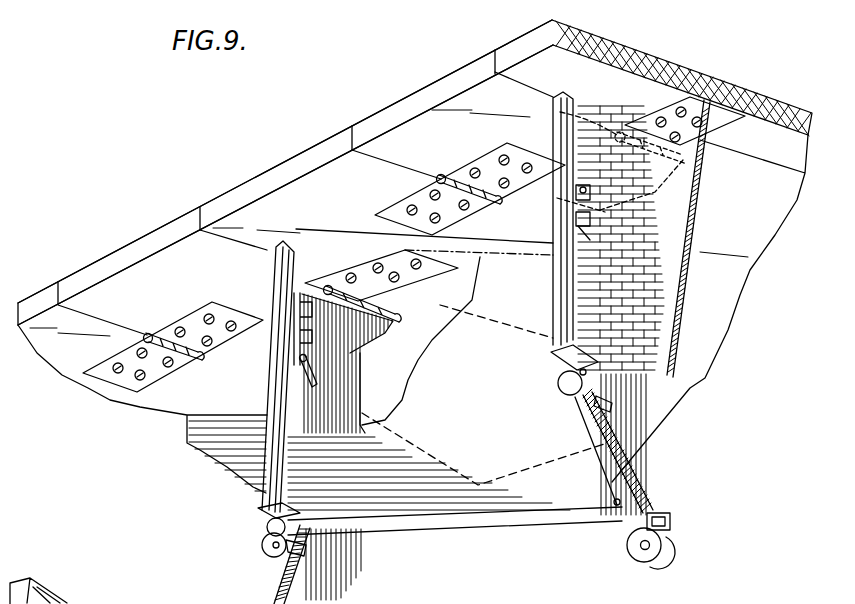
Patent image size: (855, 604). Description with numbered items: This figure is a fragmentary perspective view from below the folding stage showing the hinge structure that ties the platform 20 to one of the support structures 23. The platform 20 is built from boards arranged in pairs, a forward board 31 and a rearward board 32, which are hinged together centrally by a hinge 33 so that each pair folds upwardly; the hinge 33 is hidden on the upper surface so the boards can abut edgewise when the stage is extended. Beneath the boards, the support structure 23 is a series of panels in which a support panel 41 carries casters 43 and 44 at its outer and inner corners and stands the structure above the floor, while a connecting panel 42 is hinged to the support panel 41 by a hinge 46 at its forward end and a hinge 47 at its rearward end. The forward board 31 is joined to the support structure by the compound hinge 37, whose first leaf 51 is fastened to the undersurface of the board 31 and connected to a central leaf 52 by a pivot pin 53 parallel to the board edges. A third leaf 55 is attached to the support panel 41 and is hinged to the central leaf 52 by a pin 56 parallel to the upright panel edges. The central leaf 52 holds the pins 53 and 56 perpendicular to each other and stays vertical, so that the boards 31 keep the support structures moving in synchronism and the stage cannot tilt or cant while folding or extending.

The platform 20 is at (394, 91).
The support structure 23 is at (470, 541).
The forward board 31 is at (624, 45).
The rearward board 32 is at (455, 75).
The hinge 33 is at (147, 336).
The hinge structure 37 is at (529, 258).
The support panel 41 is at (580, 412).
The connecting panel 42 is at (702, 178).
The caster 43 is at (560, 392).
The caster 44 is at (672, 549).
The hinge 46 is at (306, 550).
The hinge 47 is at (484, 398).
The first leaf 51 is at (430, 271).
The central leaf 52 is at (380, 346).
The pivot pin 53 is at (328, 292).
The third leaf 55 is at (314, 377).
The pin 56 is at (306, 360).